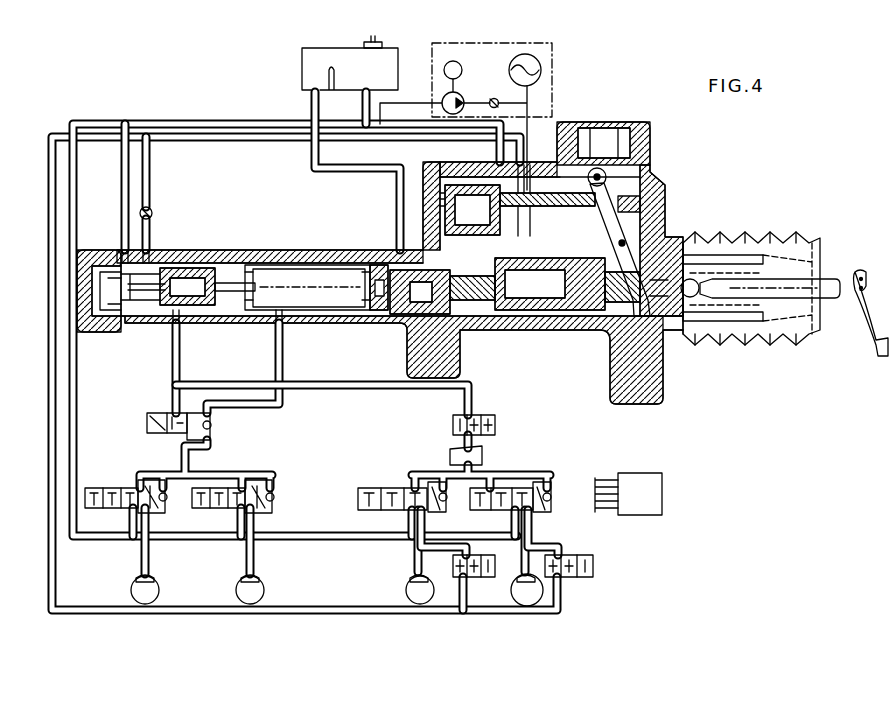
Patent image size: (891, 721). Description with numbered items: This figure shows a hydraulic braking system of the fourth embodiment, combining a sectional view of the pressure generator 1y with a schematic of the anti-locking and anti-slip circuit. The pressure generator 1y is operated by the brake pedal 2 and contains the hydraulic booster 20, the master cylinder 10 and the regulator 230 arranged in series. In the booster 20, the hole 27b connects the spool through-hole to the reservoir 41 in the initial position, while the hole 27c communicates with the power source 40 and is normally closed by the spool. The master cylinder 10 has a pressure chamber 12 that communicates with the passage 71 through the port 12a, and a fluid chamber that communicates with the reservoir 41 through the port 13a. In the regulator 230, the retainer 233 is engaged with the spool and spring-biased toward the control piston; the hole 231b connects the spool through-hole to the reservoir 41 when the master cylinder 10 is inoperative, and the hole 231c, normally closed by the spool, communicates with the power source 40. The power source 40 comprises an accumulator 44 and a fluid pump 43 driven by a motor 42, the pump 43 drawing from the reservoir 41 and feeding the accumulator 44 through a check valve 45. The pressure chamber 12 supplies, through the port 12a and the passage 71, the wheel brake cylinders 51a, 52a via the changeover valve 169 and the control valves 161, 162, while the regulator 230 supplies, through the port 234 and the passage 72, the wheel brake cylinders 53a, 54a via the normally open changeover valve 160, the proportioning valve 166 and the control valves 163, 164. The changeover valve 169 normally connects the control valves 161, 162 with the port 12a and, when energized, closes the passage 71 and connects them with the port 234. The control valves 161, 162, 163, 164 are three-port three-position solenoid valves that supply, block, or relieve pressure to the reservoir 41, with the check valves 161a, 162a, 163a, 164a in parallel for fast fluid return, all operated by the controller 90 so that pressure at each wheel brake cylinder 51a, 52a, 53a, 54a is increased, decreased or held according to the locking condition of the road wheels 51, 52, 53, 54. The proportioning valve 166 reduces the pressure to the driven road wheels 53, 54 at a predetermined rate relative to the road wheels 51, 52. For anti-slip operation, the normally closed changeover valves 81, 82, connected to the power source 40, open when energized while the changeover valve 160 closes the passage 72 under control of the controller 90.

The brake pedal 2 is at (862, 343).
The master cylinder 10 is at (312, 250).
The pressure chamber 12 is at (328, 302).
The port 12a is at (283, 330).
The port 13a is at (400, 246).
The pressure generator 1y is at (668, 220).
The hydraulic booster 20 is at (656, 162).
The hole 27b is at (500, 163).
The hole 27c is at (526, 160).
The power source 40 is at (555, 63).
The reservoir 41 is at (302, 70).
The motor 42 is at (456, 64).
The fluid pump 43 is at (458, 93).
The accumulator 44 is at (518, 62).
The check valve 45 is at (494, 98).
The road wheel 51 is at (163, 586).
The wheel brake cylinder 51a is at (150, 573).
The road wheel 52 is at (265, 586).
The wheel brake cylinder 52a is at (258, 573).
The road wheel 53 is at (406, 589).
The wheel brake cylinder 53a is at (410, 575).
The road wheel 54 is at (545, 593).
The wheel brake cylinder 54a is at (516, 577).
The passage 71 is at (285, 402).
The passage 72 is at (368, 388).
The changeover valve 81 is at (453, 570).
The changeover valve 82 is at (594, 565).
The controller 90 is at (640, 473).
The changeover valve 160 is at (479, 414).
The control valve 161 is at (114, 488).
The check valve 161a is at (165, 503).
The control valve 162 is at (232, 478).
The check valve 162a is at (272, 503).
The control valve 163 is at (397, 488).
The check valve 163a is at (445, 503).
The control valve 164 is at (492, 488).
The check valve 164a is at (551, 503).
The proportioning valve 166 is at (450, 452).
The changeover valve 169 is at (162, 412).
The regulator 230 is at (180, 258).
The hole 231b is at (124, 248).
The hole 231c is at (147, 248).
The retainer 233 is at (185, 265).
The port 234 is at (182, 326).